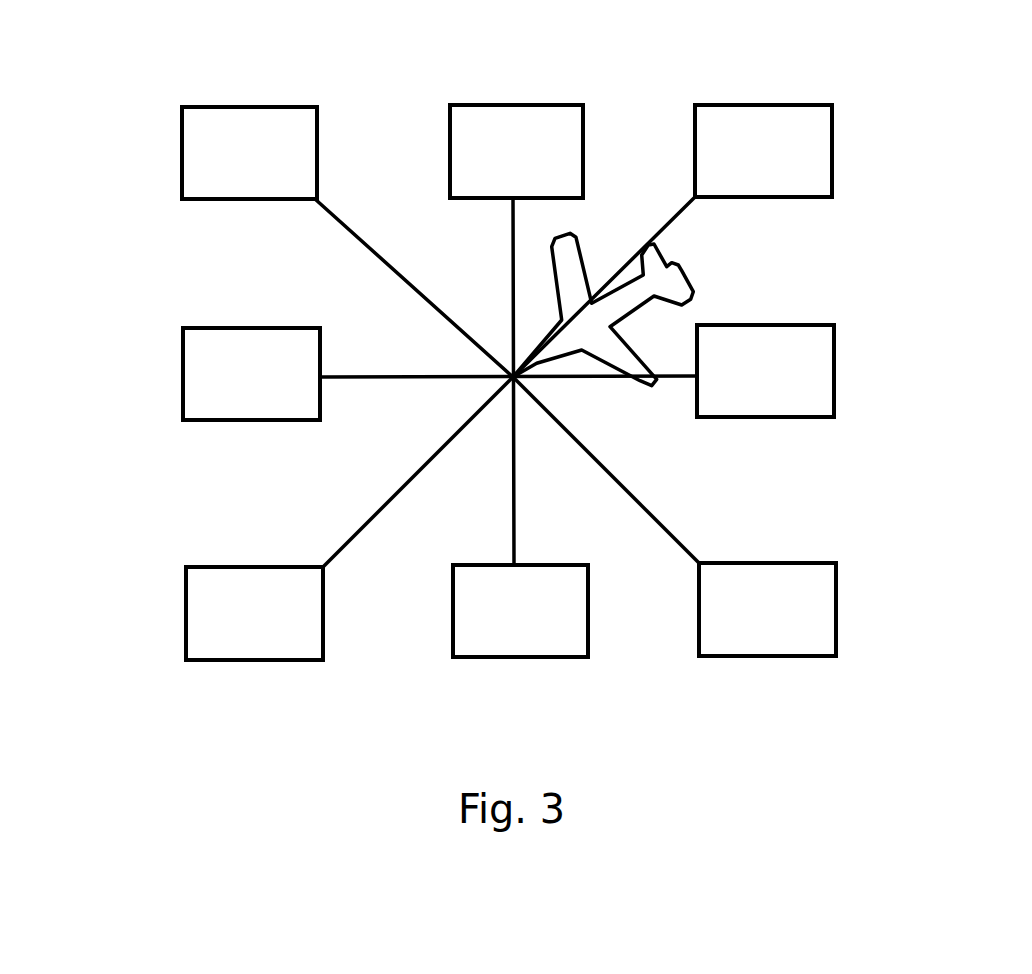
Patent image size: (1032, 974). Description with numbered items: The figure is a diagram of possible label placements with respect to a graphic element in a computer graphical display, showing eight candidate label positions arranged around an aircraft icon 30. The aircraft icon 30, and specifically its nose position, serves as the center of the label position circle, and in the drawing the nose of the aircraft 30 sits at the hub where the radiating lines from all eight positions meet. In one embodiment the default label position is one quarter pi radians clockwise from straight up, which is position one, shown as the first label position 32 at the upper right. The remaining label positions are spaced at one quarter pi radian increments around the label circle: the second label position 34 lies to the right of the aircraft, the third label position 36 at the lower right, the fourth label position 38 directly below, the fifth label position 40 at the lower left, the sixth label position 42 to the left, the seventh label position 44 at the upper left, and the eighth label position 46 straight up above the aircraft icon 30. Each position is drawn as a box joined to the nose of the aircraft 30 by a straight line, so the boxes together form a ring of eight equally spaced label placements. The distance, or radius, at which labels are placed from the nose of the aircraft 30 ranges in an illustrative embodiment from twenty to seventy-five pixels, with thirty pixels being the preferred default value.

The aircraft icon 30 is at (682, 278).
The label position 1 32 is at (833, 160).
The label position 2 34 is at (837, 385).
The label position 3 36 is at (837, 598).
The label position 4 38 is at (503, 658).
The label position 5 40 is at (185, 640).
The label position 6 42 is at (183, 370).
The label position 7 44 is at (180, 150).
The label position 8 46 is at (498, 105).